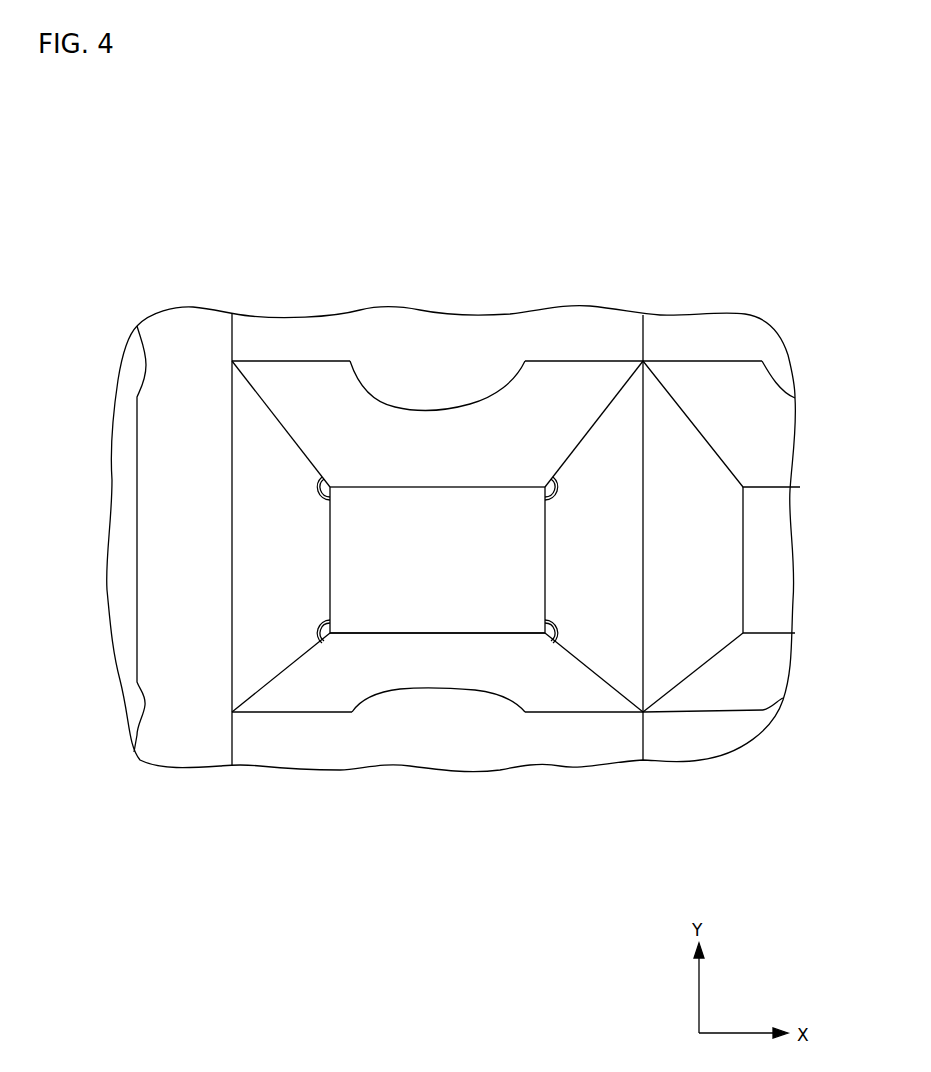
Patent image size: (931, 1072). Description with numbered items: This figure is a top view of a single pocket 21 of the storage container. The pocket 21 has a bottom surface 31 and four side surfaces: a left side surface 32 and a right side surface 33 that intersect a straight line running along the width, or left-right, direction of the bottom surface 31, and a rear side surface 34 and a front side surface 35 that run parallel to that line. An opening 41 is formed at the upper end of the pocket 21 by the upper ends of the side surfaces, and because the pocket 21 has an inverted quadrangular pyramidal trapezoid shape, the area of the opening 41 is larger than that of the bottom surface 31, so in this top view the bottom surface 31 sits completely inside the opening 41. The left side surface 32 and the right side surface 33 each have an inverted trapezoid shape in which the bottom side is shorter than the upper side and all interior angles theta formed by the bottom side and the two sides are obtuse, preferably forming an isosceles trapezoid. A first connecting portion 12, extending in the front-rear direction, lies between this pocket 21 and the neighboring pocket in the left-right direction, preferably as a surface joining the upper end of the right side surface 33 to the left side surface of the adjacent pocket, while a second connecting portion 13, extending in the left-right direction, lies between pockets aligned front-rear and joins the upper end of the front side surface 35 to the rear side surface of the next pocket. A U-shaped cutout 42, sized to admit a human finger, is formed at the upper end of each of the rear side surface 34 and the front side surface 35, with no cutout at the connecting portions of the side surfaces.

The first connecting portion 12 is at (645, 595).
The second connecting portion 13 is at (296, 361).
The pocket 21 is at (508, 340).
The bottom surface 31 is at (395, 598).
The left side surface 32 is at (272, 525).
The right side surface 33 is at (595, 525).
The rear side surface 34 is at (533, 670).
The front side surface 35 is at (362, 432).
The opening 41 is at (300, 583).
The cutout 42 is at (470, 402).